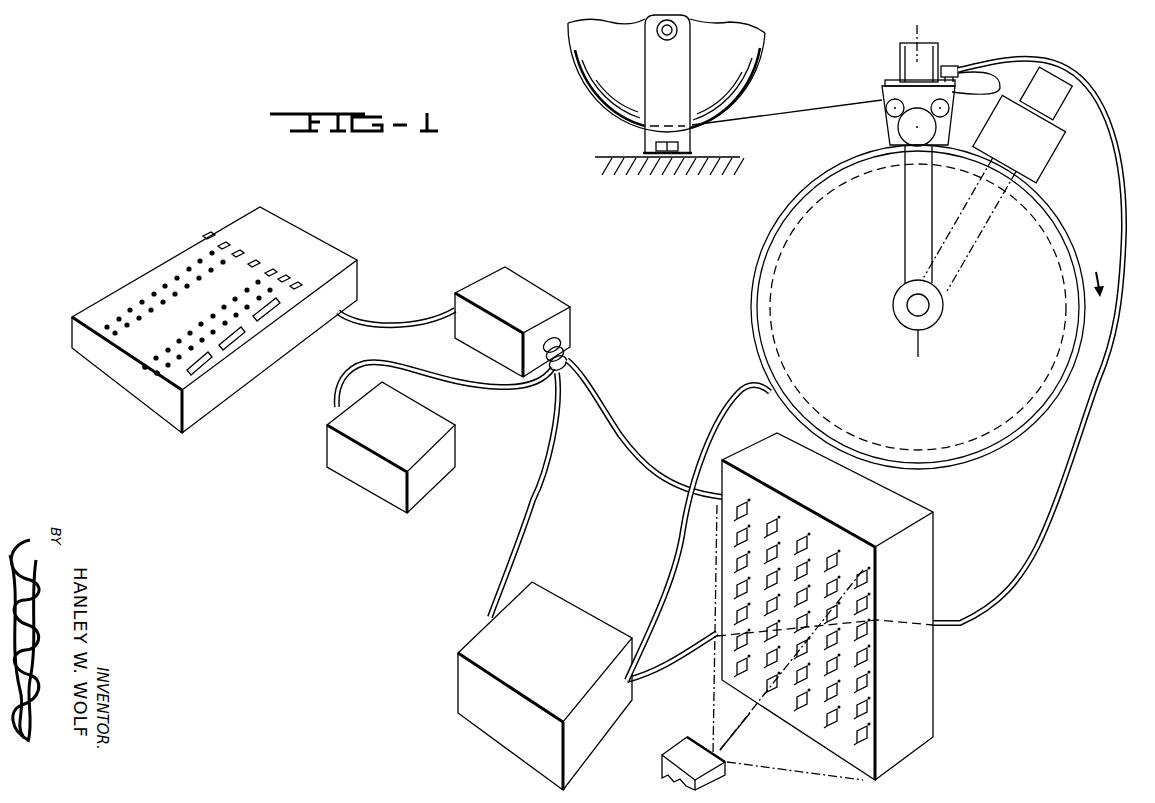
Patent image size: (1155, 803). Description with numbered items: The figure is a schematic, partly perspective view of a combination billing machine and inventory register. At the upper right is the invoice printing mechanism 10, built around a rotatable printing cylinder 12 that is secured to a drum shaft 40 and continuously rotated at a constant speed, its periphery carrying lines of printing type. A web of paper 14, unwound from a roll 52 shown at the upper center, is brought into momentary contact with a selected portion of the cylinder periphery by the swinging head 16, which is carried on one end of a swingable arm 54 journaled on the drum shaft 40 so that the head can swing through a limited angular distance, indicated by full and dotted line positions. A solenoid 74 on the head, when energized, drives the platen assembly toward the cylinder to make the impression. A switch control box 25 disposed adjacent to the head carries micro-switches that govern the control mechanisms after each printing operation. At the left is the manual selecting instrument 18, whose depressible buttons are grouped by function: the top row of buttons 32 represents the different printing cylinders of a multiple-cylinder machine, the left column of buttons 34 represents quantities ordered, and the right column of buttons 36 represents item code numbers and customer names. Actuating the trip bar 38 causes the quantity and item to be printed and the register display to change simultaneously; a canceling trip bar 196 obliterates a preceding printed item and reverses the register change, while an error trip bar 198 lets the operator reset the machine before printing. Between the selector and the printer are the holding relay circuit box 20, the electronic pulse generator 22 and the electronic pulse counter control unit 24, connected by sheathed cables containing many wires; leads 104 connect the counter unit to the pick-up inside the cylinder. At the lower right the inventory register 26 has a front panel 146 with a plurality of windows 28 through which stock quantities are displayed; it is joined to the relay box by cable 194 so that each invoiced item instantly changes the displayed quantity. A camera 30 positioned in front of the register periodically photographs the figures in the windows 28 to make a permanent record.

The invoice printing mechanism 10 is at (719, 208).
The rotatable printing cylinder 12 is at (762, 258).
The web of paper 14 is at (815, 102).
The swinging head 16 is at (876, 76).
The manual selecting instrument 18 is at (121, 248).
The holding relay circuit box 20 is at (540, 297).
The electronic pulse generator 22 is at (340, 455).
The electronic pulse counter control unit 24 is at (583, 613).
The switch control box 25 is at (958, 67).
The inventory register 26 is at (913, 577).
The windows 28 is at (870, 682).
The camera 30 is at (700, 735).
The top row of buttons 32 is at (244, 254).
The left column of buttons 34 is at (110, 330).
The right column of buttons 36 is at (162, 360).
The trip bar 38 is at (230, 351).
The drum shaft 40 is at (928, 305).
The roll 52 is at (576, 40).
The swingable arm 54 is at (905, 235).
The solenoid 74 is at (900, 60).
The leads 104 is at (688, 521).
The front panel 146 is at (813, 732).
The cable 194 is at (618, 430).
The canceling trip bar 196 is at (265, 321).
The error trip bar 198 is at (207, 374).